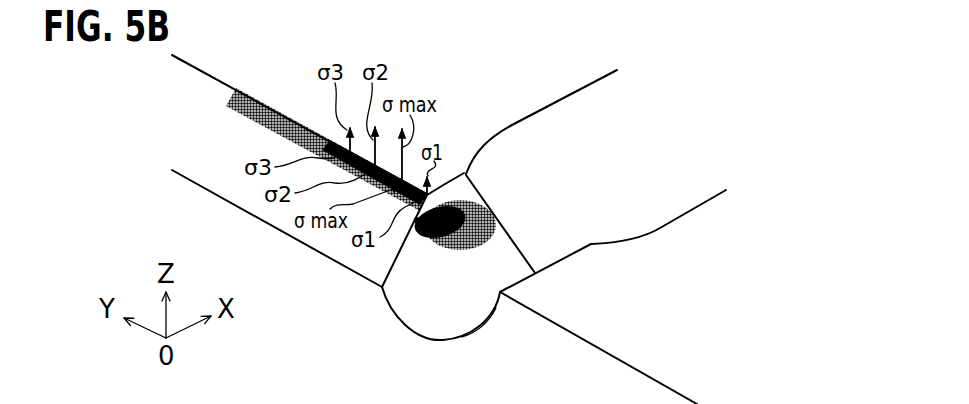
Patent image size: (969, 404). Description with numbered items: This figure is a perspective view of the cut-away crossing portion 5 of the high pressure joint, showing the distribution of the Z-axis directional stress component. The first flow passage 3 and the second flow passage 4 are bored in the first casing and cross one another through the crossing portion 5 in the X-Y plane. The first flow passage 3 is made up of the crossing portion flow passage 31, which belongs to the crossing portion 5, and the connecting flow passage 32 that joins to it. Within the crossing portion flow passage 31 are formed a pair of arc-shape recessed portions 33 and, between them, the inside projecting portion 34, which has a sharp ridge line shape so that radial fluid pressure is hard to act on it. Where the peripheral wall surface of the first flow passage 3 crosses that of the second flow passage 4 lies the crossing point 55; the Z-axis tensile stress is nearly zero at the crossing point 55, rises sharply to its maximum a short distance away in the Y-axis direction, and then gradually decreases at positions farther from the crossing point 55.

The first flow passage 3 is at (523, 56).
The second flow passage 4 is at (192, 65).
The crossing portion 5 is at (381, 323).
The crossing portion flow passage 31 is at (457, 177).
The connecting flow passage 32 is at (512, 124).
The arc-shape recessed portion 33 is at (439, 299).
The inside projecting portion 34 is at (450, 182).
The crossing point 55 is at (437, 191).